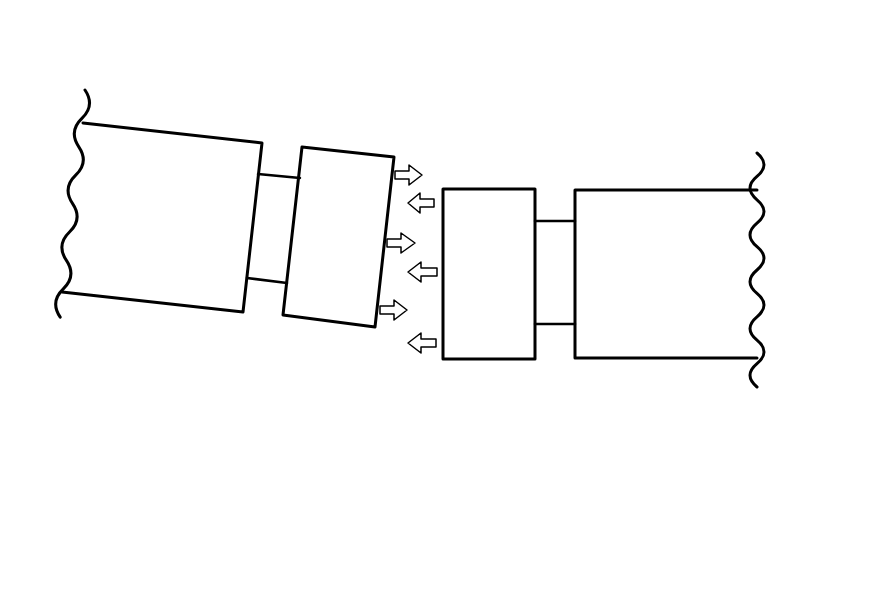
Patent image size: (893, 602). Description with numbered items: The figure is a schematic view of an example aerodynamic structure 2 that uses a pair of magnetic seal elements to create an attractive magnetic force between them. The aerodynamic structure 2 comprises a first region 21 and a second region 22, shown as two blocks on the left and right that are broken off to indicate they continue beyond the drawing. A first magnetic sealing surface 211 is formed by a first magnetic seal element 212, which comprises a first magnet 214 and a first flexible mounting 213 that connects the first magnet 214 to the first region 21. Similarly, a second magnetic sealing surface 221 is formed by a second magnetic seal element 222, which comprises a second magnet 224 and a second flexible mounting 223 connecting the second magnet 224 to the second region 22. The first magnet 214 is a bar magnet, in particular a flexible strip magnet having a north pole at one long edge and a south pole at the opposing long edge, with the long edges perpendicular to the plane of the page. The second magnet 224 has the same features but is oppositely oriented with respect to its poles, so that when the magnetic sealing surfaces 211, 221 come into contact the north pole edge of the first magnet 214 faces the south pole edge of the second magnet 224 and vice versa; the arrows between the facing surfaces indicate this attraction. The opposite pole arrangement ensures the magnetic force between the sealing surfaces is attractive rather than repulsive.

The aerodynamic structure 2 is at (298, 448).
The first region 21 is at (160, 253).
The first magnetic sealing surface 211 is at (382, 263).
The first magnetic seal element 212 is at (259, 98).
The first flexible mounting 213 is at (270, 202).
The first magnet 214 is at (330, 195).
The second region 22 is at (692, 313).
The second magnetic sealing surface 221 is at (443, 297).
The second magnetic seal element 222 is at (526, 88).
The second flexible mounting 223 is at (547, 263).
The second magnet 224 is at (490, 212).